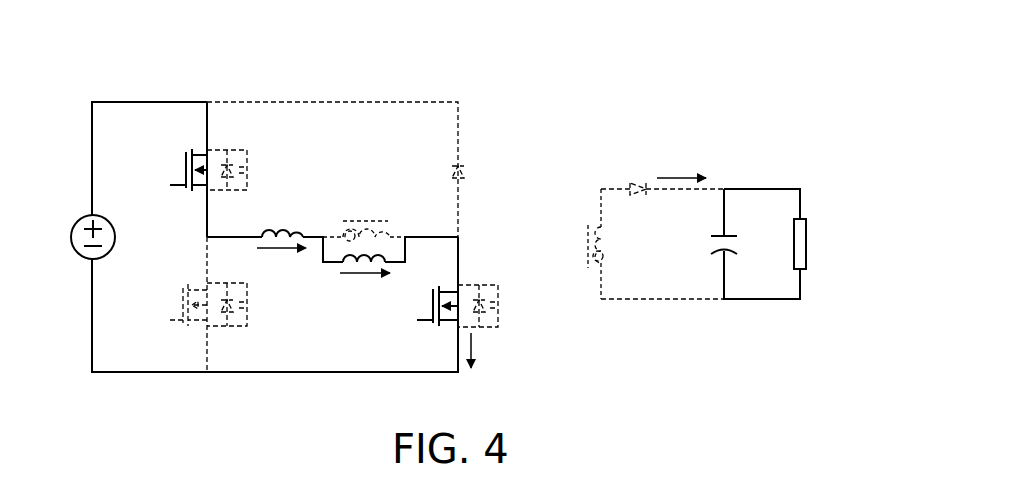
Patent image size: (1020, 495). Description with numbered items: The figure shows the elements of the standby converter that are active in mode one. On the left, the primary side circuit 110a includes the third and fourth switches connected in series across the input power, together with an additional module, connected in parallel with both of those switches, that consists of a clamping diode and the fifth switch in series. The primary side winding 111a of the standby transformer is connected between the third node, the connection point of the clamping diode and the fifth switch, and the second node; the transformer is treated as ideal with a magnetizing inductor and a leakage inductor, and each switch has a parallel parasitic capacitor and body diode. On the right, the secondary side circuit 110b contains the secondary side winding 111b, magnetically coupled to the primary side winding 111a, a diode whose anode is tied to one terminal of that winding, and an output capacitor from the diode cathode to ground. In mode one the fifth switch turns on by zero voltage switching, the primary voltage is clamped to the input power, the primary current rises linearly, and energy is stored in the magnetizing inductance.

The primary side circuit 110a is at (423, 82).
The secondary side circuit 110b is at (762, 168).
The primary side winding 111a is at (412, 222).
The secondary side winding 111b is at (589, 211).